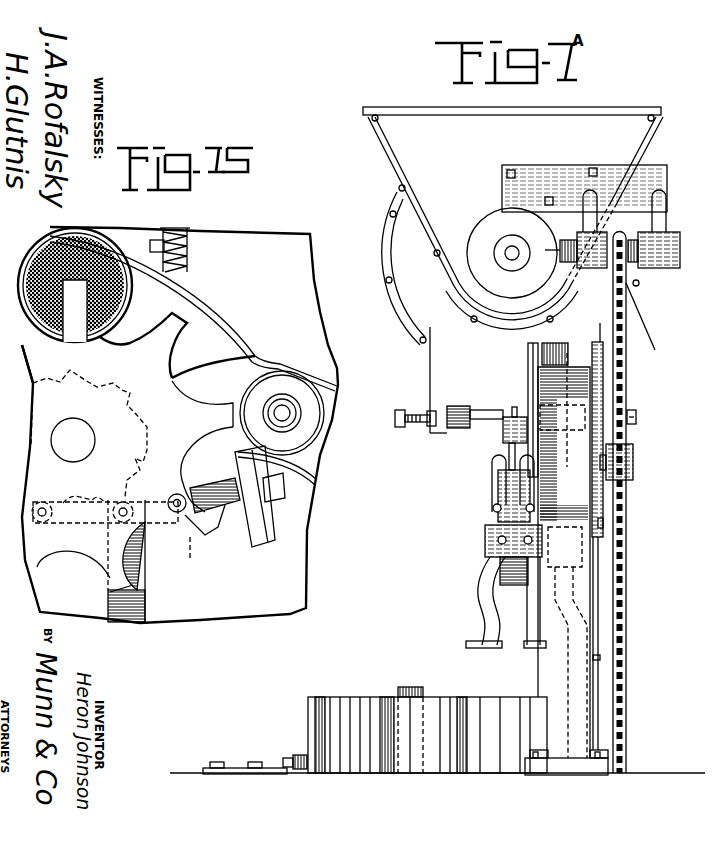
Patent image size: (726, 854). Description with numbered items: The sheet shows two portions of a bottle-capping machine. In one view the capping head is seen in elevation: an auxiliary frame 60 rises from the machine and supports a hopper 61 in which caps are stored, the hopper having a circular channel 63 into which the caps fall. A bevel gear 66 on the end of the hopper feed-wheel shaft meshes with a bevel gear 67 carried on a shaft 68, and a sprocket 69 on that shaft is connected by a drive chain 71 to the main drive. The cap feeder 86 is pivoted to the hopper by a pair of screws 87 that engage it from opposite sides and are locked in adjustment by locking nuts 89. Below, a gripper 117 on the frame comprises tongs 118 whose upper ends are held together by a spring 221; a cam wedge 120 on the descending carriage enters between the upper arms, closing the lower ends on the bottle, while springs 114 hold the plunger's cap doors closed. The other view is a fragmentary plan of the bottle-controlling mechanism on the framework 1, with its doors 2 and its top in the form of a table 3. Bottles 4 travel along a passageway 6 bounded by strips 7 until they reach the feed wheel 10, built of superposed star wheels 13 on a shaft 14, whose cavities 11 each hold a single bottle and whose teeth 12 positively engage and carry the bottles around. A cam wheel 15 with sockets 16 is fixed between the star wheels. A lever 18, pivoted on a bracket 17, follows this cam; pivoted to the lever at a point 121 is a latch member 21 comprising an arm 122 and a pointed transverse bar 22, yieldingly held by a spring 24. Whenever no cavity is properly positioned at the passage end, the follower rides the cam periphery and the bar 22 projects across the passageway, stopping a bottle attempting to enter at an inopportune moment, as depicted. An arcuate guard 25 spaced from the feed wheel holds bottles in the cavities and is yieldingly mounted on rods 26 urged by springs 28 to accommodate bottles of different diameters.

In FIG. 15, the framework 1 is at (322, 333).
In FIG. 15, the doors 2 is at (338, 393).
In FIG. 15, the table 3 is at (305, 270).
In FIG. 15, the bottles 4 is at (297, 378).
In FIG. 15, the passageway 6 is at (330, 407).
In FIG. 1A, the passageway 6 is at (370, 737).
In FIG. 15, the strips 7 is at (310, 480).
In FIG. 1A, the strips 7 is at (353, 702).
In FIG. 15, the feed wheel 10 is at (166, 377).
In FIG. 15, the cavities 11 is at (197, 403).
In FIG. 15, the teeth 12 is at (173, 328).
In FIG. 15, the star wheels 13 is at (210, 526).
In FIG. 15, the shaft 14 is at (88, 437).
In FIG. 15, the cam wheel 15 is at (129, 394).
In FIG. 15, the sockets 16 is at (138, 414).
In FIG. 15, the bracket 17 is at (142, 606).
In FIG. 15, the lever 18 is at (164, 519).
In FIG. 15, the latch member 21 is at (176, 495).
In FIG. 1A, the latch member 21 is at (303, 755).
In FIG. 15, the bar 22 is at (266, 548).
In FIG. 1A, the spring 24 is at (288, 760).
In FIG. 15, the guard 25 is at (235, 322).
In FIG. 15, the rods 26 is at (178, 238).
In FIG. 15, the springs 28 is at (190, 250).
In FIG. 1A, the auxiliary frame 60 is at (570, 652).
In FIG. 1A, the hopper 61 is at (622, 142).
In FIG. 1A, the circular channel 63 is at (580, 240).
In FIG. 1A, the bevel gear 66 is at (494, 222).
In FIG. 1A, the bevel gear 67 is at (565, 268).
In FIG. 1A, the shaft 68 is at (592, 250).
In FIG. 1A, the sprocket 69 is at (637, 287).
In FIG. 1A, the drive chain 71 is at (628, 642).
In FIG. 1A, the feeder 86 is at (494, 466).
In FIG. 1A, the screws 87 is at (462, 426).
In FIG. 1A, the locking nuts 89 is at (427, 429).
In FIG. 1A, the springs 114 is at (500, 568).
In FIG. 1A, the gripper 117 is at (481, 612).
In FIG. 1A, the tongs 118 is at (527, 645).
In FIG. 1A, the cam wedge 120 is at (508, 417).
In FIG. 15, the pivot point 121 is at (184, 557).
In FIG. 15, the arm 122 is at (203, 497).
In FIG. 1A, the spring 221 is at (520, 512).